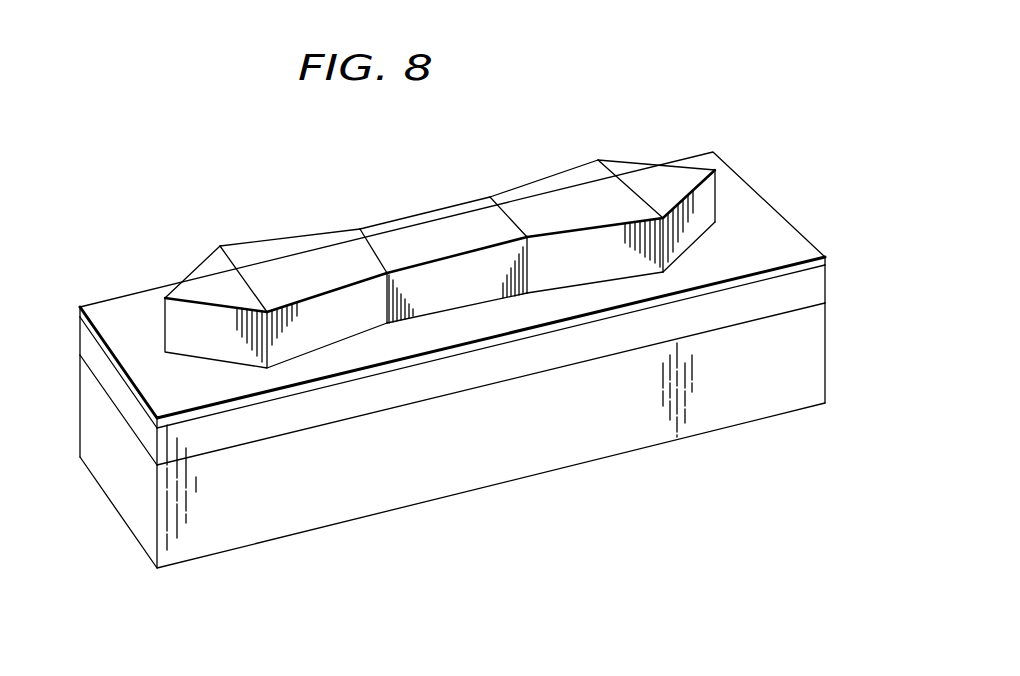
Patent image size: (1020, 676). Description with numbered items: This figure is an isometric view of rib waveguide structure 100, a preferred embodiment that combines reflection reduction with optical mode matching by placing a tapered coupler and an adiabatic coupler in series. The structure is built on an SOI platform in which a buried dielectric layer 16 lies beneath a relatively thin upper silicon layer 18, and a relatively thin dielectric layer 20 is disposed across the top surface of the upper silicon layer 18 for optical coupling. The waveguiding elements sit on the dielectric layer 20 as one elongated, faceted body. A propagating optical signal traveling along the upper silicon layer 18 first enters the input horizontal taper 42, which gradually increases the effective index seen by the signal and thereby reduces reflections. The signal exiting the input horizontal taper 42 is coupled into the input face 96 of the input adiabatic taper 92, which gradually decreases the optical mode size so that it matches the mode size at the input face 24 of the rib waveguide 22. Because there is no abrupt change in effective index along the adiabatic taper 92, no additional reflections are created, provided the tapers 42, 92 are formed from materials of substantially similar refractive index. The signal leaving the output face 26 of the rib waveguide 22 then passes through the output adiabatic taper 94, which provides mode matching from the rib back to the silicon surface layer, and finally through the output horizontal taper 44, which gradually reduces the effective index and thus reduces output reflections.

The rib waveguide structure 100 is at (578, 500).
The buried dielectric layer 16 is at (818, 357).
The upper silicon layer 18 is at (818, 288).
The dielectric layer 20 is at (822, 262).
The input horizontal taper 42 is at (193, 282).
The input face of input adiabatic taper 96 is at (235, 271).
The input adiabatic taper 92 is at (292, 248).
The input face of rib waveguide 24 is at (372, 242).
The rib waveguide 22 is at (422, 218).
The output face of rib waveguide 26 is at (498, 208).
The output adiabatic taper 94 is at (542, 188).
The output horizontal taper 44 is at (645, 168).